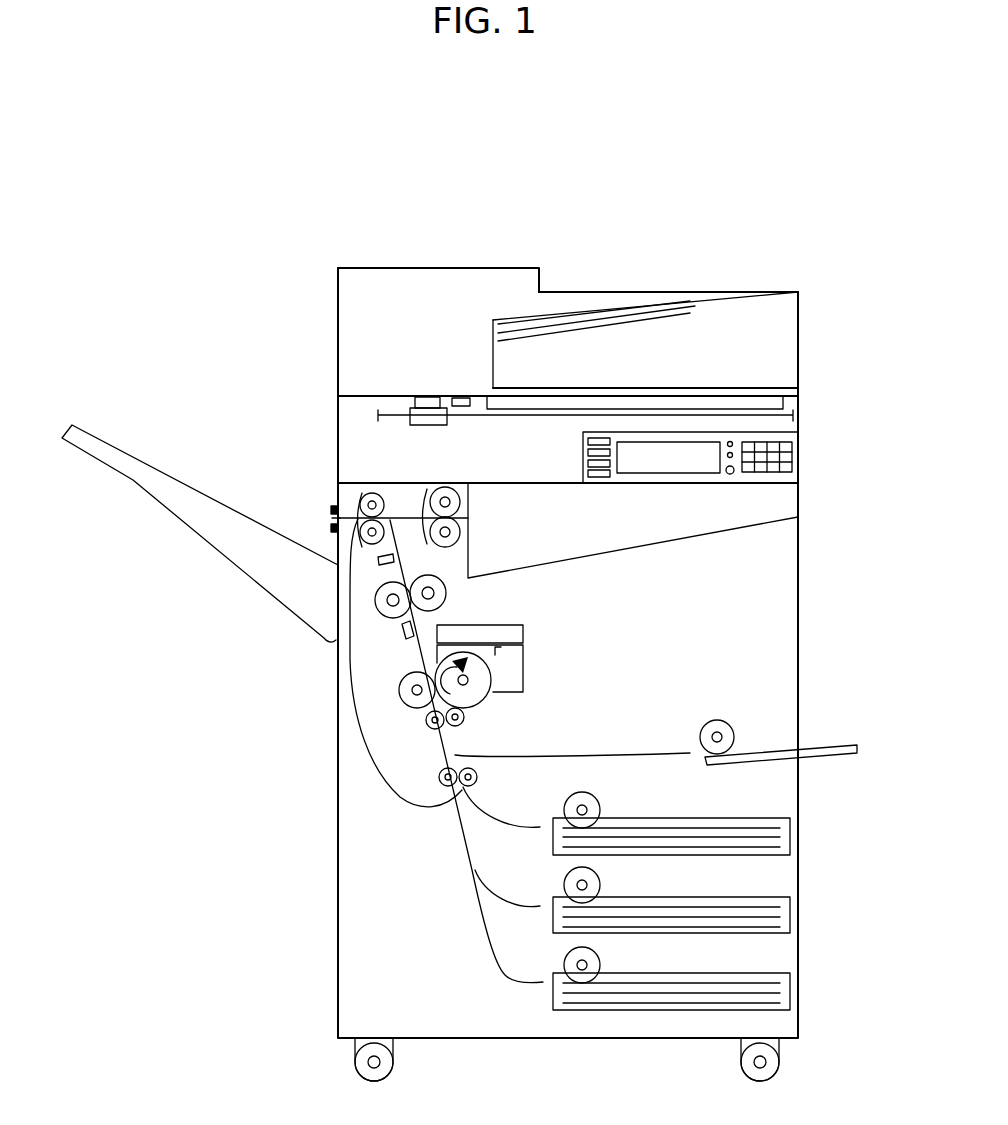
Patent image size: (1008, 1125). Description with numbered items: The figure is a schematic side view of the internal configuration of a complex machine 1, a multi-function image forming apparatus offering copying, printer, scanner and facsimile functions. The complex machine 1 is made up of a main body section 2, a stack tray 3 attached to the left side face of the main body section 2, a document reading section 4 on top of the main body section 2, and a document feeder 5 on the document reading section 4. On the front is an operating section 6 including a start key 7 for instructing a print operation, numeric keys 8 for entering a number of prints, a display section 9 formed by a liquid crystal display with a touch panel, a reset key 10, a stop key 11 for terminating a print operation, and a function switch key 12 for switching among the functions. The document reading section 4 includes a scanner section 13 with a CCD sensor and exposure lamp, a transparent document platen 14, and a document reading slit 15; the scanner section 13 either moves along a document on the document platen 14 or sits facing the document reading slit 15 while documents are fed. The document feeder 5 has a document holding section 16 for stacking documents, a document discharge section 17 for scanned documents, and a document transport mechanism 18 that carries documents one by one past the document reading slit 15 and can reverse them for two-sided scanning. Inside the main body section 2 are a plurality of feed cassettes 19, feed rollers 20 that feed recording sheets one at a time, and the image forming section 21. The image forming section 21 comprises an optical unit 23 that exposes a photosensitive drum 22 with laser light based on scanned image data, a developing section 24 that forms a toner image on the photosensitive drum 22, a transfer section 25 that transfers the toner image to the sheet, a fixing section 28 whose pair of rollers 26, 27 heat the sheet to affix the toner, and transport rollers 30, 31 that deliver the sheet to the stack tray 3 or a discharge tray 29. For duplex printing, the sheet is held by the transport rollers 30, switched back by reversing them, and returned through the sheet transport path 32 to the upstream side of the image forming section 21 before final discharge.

The complex machine 1 is at (148, 267).
The main body section 2 is at (760, 659).
The stack tray 3 is at (242, 584).
The document reading section 4 is at (348, 425).
The document feeder 5 is at (645, 289).
The operating section 6 is at (698, 433).
The start key 7 is at (728, 477).
The numeric keys 8 is at (752, 478).
The display section 9 is at (643, 462).
The reset key 10 is at (731, 450).
The stop key 11 is at (728, 440).
The function switch key 12 is at (587, 467).
The scanner section 13 is at (429, 427).
The document platen 14 is at (790, 400).
The document reading slit 15 is at (427, 399).
The document holding section 16 is at (712, 298).
The document discharge section 17 is at (727, 385).
The document transport mechanism 18 is at (424, 348).
The feed cassettes 19 is at (788, 997).
The feed rollers 20 is at (600, 811).
The image forming section 21 is at (351, 752).
The photosensitive drum 22 is at (473, 698).
The optical unit 23 is at (515, 632).
The developing section 24 is at (515, 670).
The transfer section 25 is at (413, 699).
The roller 26 is at (388, 583).
The roller 27 is at (442, 595).
The fixing section 28 is at (484, 594).
The discharge tray 29 is at (633, 549).
The transport rollers 30 is at (412, 517).
The transport rollers 31 is at (347, 517).
The sheet transport path 32 is at (381, 677).